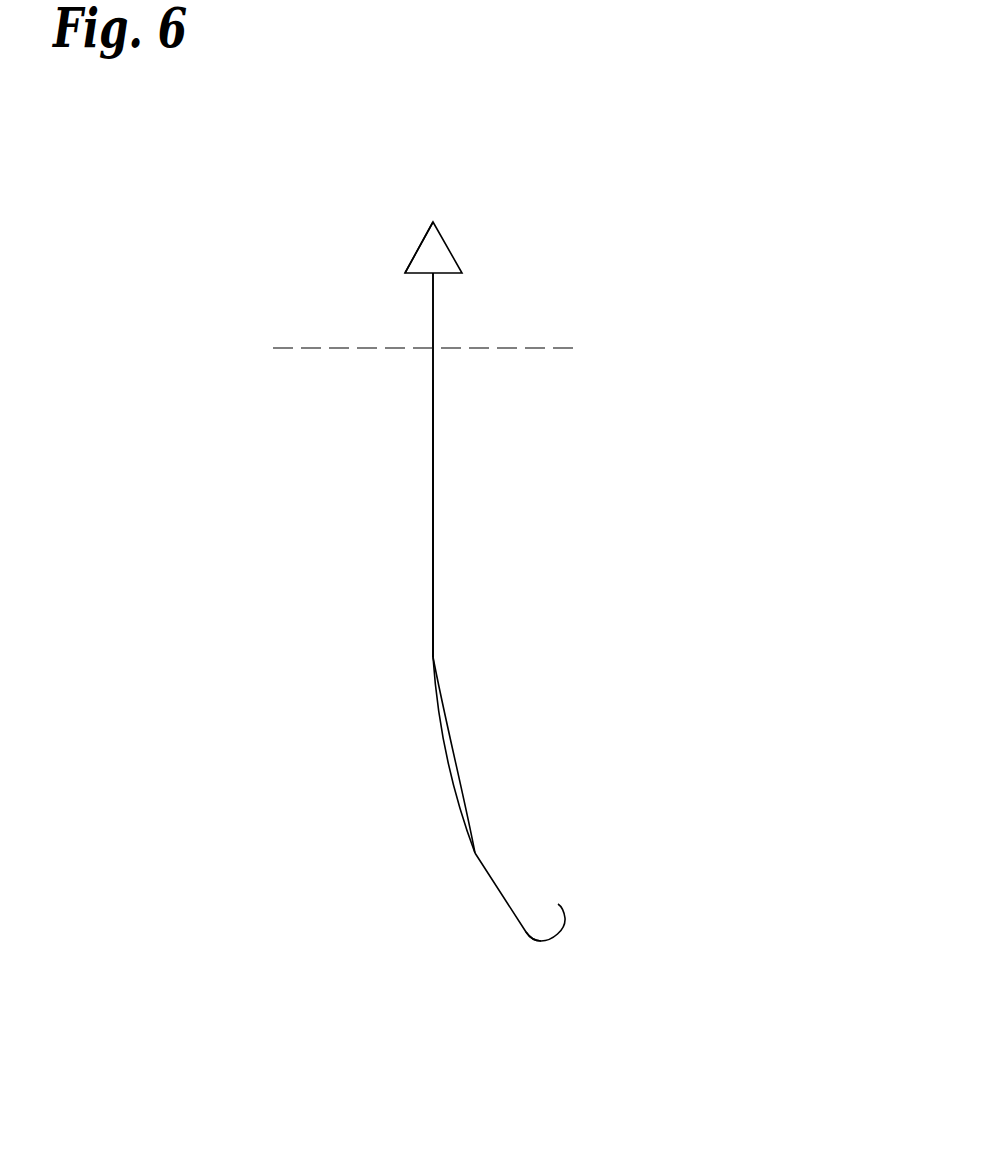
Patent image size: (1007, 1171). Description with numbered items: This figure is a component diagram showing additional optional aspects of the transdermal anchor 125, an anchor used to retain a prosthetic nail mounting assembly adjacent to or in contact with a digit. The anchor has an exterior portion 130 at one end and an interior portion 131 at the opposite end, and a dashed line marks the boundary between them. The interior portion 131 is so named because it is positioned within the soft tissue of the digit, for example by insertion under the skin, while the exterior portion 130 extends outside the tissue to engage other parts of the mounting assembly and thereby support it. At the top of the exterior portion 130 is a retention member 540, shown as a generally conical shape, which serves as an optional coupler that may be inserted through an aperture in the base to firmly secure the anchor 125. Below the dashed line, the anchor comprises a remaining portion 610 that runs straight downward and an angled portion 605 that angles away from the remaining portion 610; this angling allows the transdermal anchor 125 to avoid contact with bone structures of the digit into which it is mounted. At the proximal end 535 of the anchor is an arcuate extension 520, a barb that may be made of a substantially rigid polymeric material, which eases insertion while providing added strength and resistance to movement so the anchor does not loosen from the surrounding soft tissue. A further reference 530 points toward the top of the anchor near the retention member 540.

The transdermal anchor 125 is at (688, 122).
The exterior portion 130 is at (386, 311).
The interior portion 131 is at (370, 521).
The arcuate extension 520 is at (538, 941).
The anchor tip 530 is at (445, 194).
The proximal end 535 is at (595, 950).
The retention member 540 is at (418, 247).
The angled portion 605 is at (495, 820).
The remaining portion 610 is at (465, 556).